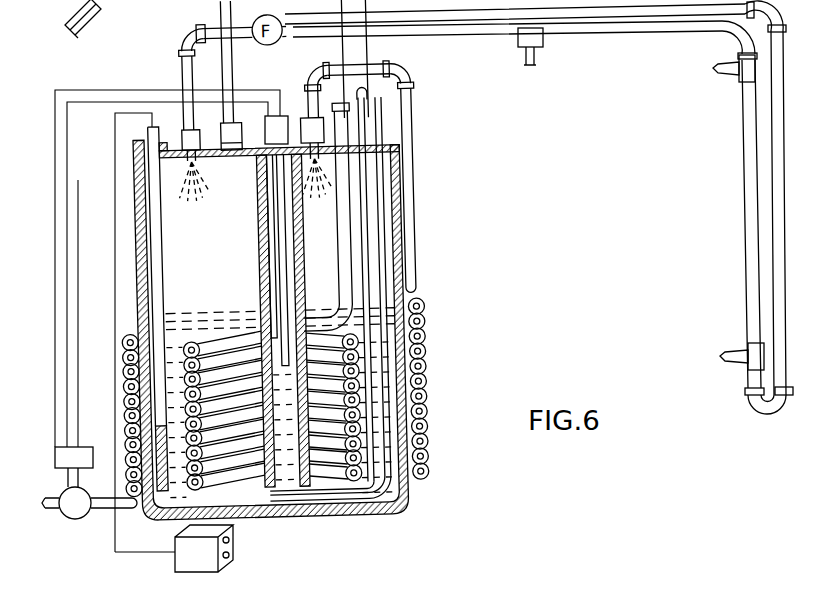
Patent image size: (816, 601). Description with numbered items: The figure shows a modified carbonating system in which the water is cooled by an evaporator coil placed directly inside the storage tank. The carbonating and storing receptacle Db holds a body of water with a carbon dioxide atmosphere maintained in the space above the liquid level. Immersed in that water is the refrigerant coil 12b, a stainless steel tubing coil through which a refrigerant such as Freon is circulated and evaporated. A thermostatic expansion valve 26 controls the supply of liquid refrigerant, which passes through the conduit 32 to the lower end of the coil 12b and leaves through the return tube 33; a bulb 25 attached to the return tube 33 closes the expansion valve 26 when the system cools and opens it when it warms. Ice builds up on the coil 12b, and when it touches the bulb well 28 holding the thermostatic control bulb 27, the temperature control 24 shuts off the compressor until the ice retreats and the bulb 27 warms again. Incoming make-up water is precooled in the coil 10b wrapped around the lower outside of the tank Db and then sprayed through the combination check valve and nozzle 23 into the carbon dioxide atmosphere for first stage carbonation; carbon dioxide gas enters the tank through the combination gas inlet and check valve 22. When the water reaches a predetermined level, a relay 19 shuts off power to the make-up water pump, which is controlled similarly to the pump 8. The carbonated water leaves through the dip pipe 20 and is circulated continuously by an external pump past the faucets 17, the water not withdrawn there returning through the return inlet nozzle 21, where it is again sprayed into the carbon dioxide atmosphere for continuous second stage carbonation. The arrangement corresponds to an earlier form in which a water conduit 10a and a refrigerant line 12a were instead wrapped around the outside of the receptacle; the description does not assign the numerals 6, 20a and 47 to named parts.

The supply pipe 6 is at (543, 13).
The pump 8 is at (75, 493).
The water conduit 10a is at (116, 507).
The coil 10b is at (416, 302).
The refrigerant line 12a is at (95, 8).
The coil 12b is at (222, 342).
The faucets 17 is at (733, 73).
The relay 19 is at (62, 450).
The dip pipe 20 is at (338, 502).
The feed pipe 20a is at (233, 8).
The return inlet nozzle 21 is at (210, 166).
The combination gas inlet and check valve 22 is at (240, 138).
The combination check valve and nozzle 23 is at (325, 137).
The temperature control 24 is at (236, 545).
The bulb 25 is at (352, 113).
The thermostatic expansion valve 26 is at (368, 95).
The thermostatic control bulb 27 is at (153, 438).
The bulb well 28 is at (164, 232).
The conduit 32 is at (365, 266).
The return tube 33 is at (343, 221).
The valve 47 is at (536, 50).
The carbonating and storing receptacle Db is at (283, 377).